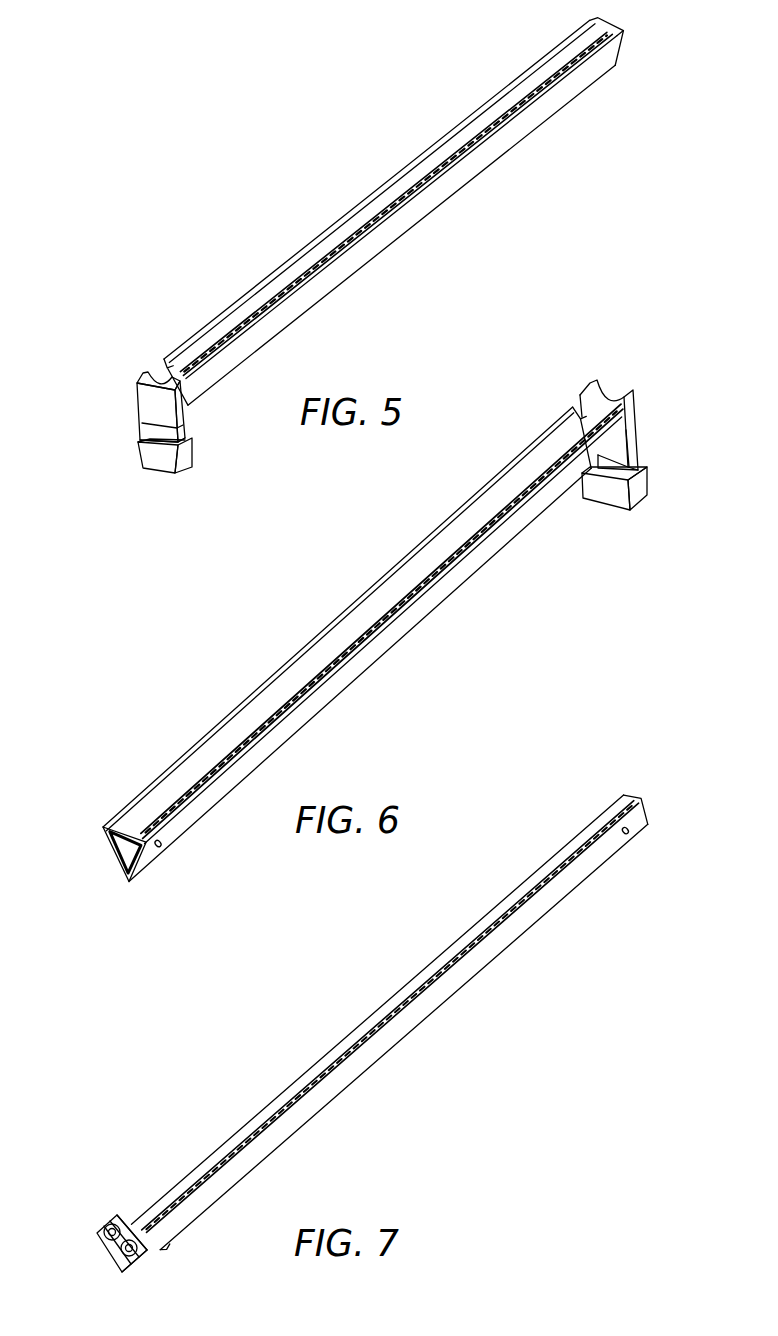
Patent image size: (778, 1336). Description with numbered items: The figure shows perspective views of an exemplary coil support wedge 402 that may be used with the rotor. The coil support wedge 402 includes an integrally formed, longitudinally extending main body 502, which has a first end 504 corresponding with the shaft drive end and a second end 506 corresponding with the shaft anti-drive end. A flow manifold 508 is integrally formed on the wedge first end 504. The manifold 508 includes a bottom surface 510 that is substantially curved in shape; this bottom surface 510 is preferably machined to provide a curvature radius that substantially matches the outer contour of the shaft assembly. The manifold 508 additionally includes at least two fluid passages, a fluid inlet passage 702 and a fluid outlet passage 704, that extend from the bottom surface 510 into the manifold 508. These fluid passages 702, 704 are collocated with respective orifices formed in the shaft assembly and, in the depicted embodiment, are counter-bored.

In FIG. 5, the coil support wedge 402 is at (256, 221).
In FIG. 6, the coil support wedge 402 is at (252, 627).
In FIG. 7, the coil support wedge 402 is at (251, 1077).
In FIG. 5, the main body 502 is at (355, 205).
In FIG. 6, the main body 502 is at (357, 596).
In FIG. 7, the main body 502 is at (352, 1032).
In FIG. 5, the first end 504 is at (137, 389).
In FIG. 6, the first end 504 is at (640, 400).
In FIG. 7, the first end 504 is at (98, 1255).
In FIG. 5, the second end 506 is at (627, 30).
In FIG. 6, the second end 506 is at (112, 852).
In FIG. 7, the second end 506 is at (648, 813).
In FIG. 5, the flow manifold 508 is at (182, 427).
In FIG. 6, the flow manifold 508 is at (640, 457).
In FIG. 7, the flow manifold 508 is at (142, 1270).
In FIG. 5, the bottom surface 510 is at (158, 473).
In FIG. 6, the bottom surface 510 is at (610, 504).
In FIG. 7, the bottom surface 510 is at (125, 1217).
In FIG. 7, the fluid inlet passage 702 is at (102, 1228).
In FIG. 7, the fluid outlet passage 704 is at (117, 1270).